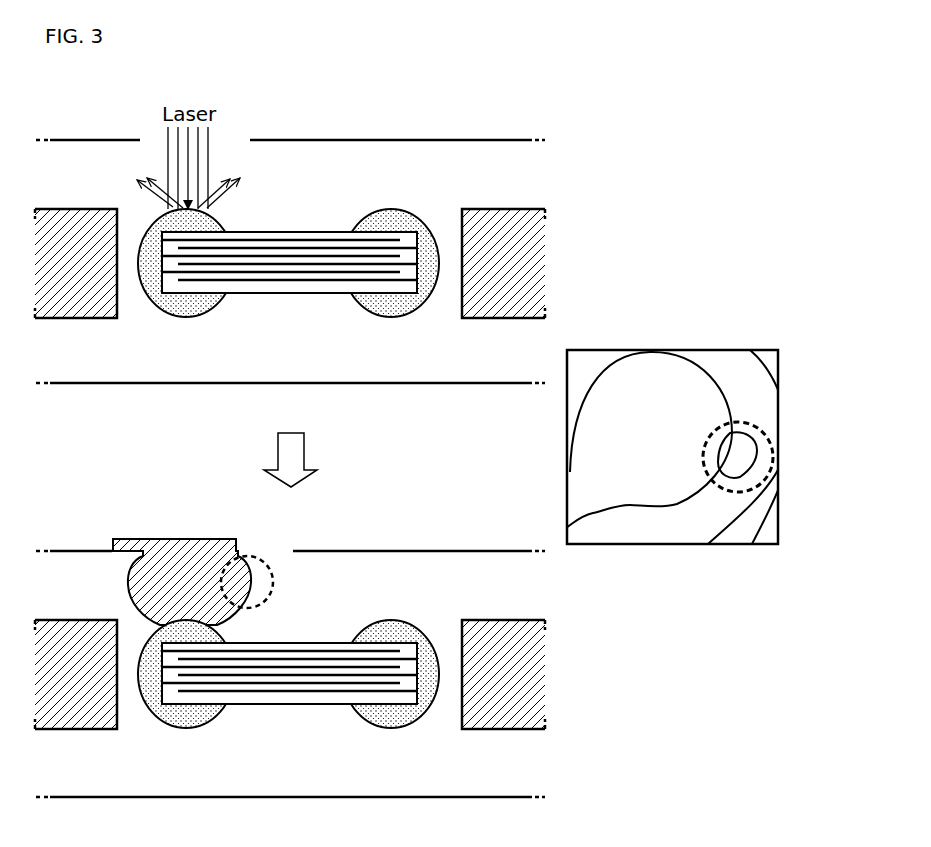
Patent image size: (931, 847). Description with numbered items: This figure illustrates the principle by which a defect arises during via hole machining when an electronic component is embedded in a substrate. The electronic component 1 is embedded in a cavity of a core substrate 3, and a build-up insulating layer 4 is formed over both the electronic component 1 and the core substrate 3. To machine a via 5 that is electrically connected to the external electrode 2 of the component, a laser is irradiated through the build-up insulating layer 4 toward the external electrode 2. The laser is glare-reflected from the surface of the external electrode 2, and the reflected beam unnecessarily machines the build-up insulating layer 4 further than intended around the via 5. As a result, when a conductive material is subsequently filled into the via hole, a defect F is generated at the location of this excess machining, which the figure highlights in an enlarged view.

The electronic component 1 is at (320, 232).
The external electrode 2 is at (189, 312).
The core substrate 3 is at (535, 266).
The build-up insulating layer 4 is at (535, 172).
The via 5 is at (185, 547).
The defect F is at (706, 457).